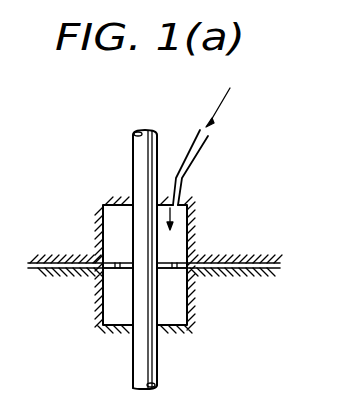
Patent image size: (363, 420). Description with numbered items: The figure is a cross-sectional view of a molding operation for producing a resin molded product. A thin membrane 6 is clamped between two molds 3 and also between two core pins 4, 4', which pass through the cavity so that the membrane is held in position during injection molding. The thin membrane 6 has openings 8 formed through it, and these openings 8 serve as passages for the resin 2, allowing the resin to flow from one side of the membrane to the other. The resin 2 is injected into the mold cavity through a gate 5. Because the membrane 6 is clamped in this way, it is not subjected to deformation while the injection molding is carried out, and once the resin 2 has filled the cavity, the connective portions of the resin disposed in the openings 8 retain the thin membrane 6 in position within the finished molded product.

The resin 2 is at (228, 100).
The molds 3 is at (232, 306).
The core pins 4 is at (101, 259).
The lower end of electrode rod 4' is at (112, 371).
The gate 5 is at (190, 152).
The thin membrane 6 is at (130, 277).
The openings 8 is at (176, 270).